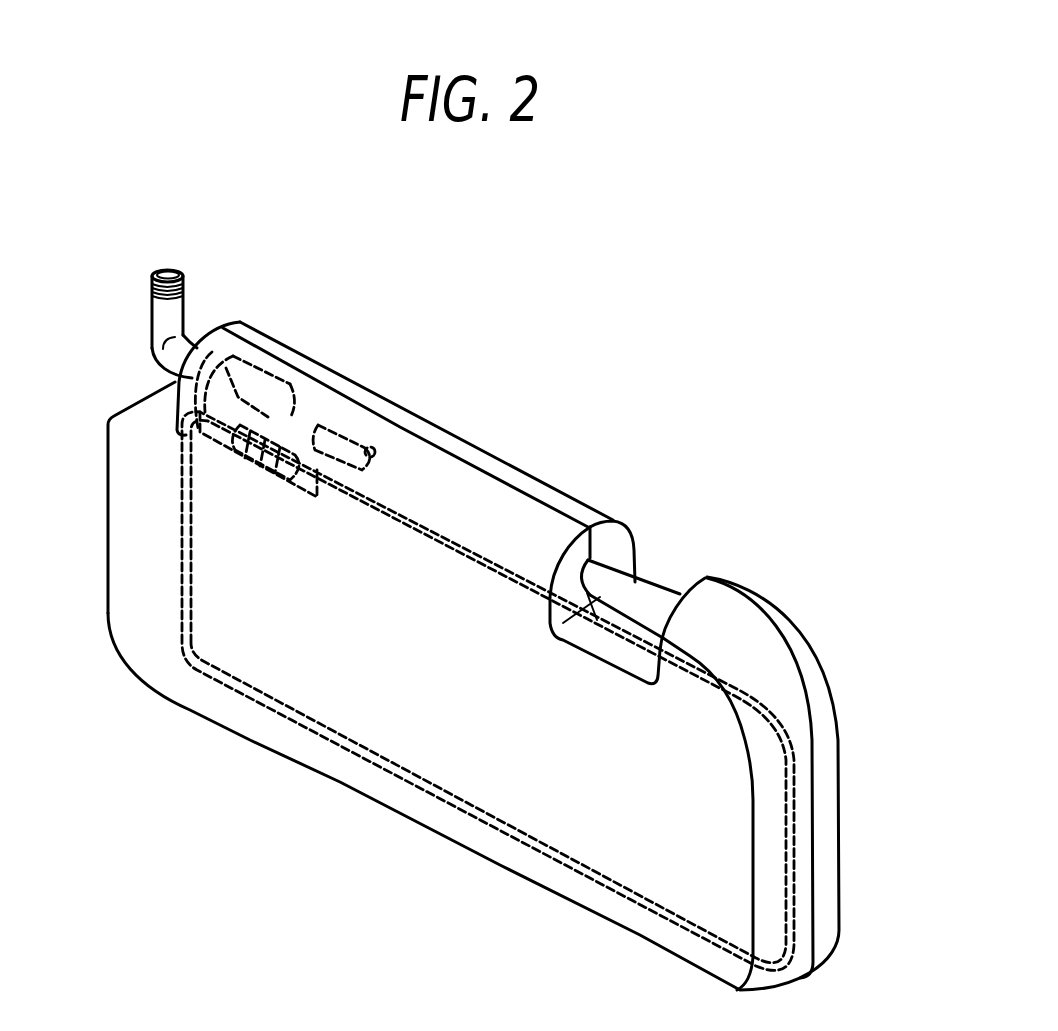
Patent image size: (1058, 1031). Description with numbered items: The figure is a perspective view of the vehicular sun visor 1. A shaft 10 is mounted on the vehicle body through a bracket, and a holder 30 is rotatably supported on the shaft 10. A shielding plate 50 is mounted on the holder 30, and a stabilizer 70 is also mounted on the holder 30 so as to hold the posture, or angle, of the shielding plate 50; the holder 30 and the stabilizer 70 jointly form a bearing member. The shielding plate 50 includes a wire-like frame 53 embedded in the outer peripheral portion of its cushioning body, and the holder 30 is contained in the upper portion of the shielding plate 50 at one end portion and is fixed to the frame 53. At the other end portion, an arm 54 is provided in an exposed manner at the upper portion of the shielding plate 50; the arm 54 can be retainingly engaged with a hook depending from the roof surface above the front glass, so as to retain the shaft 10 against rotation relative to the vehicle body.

The sun visor 1 is at (560, 396).
The shaft 10 is at (150, 323).
The holder 30 is at (237, 333).
The shielding plate 50 is at (253, 740).
The frame 53 is at (790, 808).
The arm 54 is at (662, 585).
The stabilizer 70 is at (292, 366).